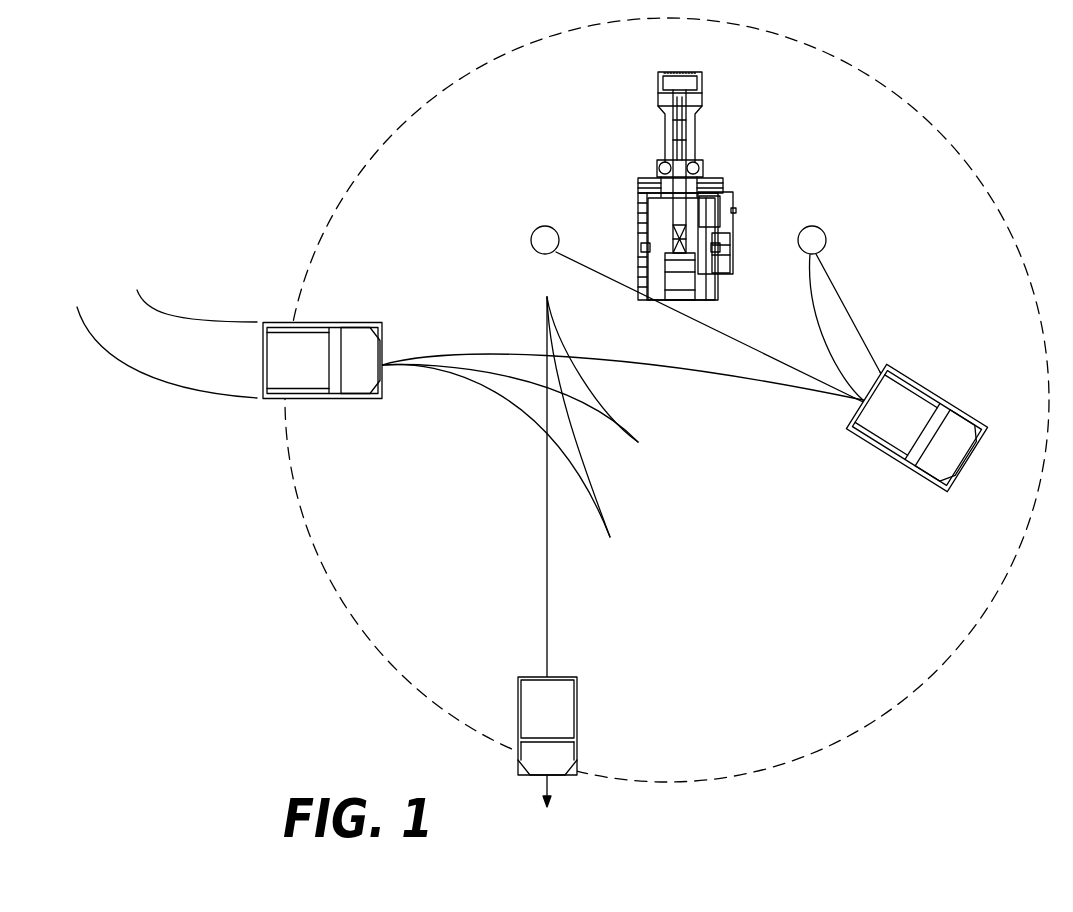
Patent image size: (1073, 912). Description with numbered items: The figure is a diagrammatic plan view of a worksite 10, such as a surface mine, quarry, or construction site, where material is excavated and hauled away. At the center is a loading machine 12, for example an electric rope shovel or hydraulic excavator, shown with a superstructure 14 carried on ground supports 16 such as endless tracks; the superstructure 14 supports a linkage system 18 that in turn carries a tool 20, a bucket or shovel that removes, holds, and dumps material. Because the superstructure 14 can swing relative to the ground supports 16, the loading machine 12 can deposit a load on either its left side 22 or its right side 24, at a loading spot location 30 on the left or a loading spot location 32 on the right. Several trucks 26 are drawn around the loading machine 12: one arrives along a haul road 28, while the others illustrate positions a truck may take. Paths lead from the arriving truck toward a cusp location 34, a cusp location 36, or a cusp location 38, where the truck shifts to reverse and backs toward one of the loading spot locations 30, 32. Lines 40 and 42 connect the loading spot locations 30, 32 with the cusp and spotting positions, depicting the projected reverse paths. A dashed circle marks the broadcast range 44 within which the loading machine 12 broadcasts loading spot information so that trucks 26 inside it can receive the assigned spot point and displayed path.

The worksite 10 is at (352, 114).
The loading machine 12 is at (743, 95).
The superstructure 14 is at (704, 290).
The ground supports 16 is at (703, 178).
The linkage system 18 is at (662, 127).
The tool 20 is at (657, 80).
The left side 22 is at (614, 190).
The right side 24 is at (745, 213).
The trucks 26 is at (274, 321).
The haul road 28 is at (122, 375).
The loading spot location 30 is at (531, 241).
The loading spot location 32 is at (826, 238).
The cusp location 34 is at (613, 540).
The cusp location 36 is at (642, 445).
The cusp location 38 is at (860, 404).
The link 40 is at (672, 322).
The link 42 is at (860, 328).
The broadcast range 44 is at (973, 178).